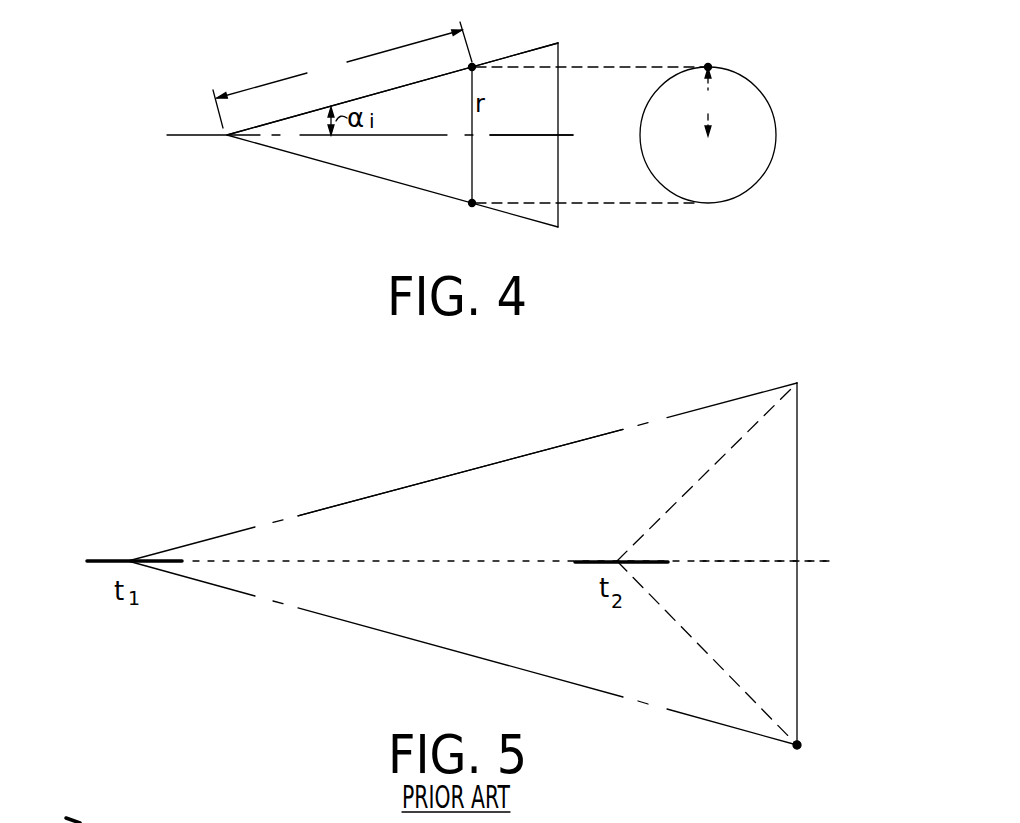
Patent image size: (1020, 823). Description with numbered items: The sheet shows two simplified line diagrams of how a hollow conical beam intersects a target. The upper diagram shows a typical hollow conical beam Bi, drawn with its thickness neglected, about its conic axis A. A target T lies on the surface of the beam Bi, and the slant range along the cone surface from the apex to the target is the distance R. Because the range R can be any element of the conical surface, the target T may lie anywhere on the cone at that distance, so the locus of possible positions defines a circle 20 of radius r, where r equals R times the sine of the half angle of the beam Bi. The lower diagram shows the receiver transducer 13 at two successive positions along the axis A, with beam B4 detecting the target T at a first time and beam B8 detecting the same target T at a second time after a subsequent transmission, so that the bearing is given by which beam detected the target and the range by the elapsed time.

In FIG. 4, the circle 20 is at (760, 92).
In FIG. 5, the receiver transducer 13 is at (100, 559).
In FIG. 4, the conic axis A is at (573, 135).
In FIG. 5, the conic axis A is at (817, 562).
In FIG. 4, the target T is at (708, 63).
In FIG. 5, the target T is at (801, 746).
In FIG. 5, the conical beam B4 is at (603, 433).
In FIG. 5, the conical beam B8 is at (702, 483).
In FIG. 4, the hollow conical beam Bi is at (497, 60).
In FIG. 4, the slant range R is at (327, 71).